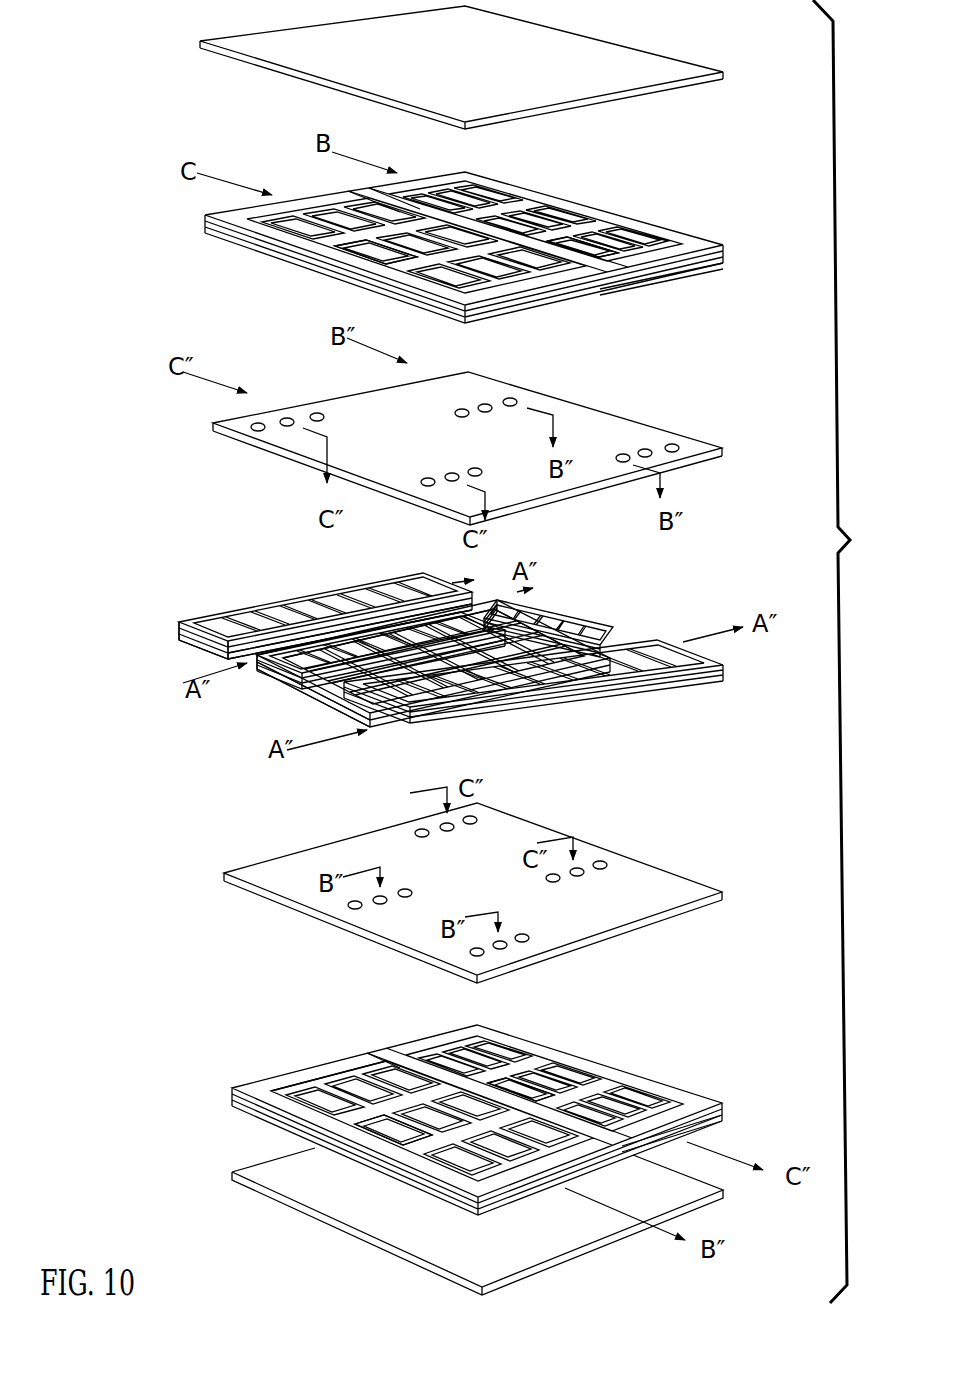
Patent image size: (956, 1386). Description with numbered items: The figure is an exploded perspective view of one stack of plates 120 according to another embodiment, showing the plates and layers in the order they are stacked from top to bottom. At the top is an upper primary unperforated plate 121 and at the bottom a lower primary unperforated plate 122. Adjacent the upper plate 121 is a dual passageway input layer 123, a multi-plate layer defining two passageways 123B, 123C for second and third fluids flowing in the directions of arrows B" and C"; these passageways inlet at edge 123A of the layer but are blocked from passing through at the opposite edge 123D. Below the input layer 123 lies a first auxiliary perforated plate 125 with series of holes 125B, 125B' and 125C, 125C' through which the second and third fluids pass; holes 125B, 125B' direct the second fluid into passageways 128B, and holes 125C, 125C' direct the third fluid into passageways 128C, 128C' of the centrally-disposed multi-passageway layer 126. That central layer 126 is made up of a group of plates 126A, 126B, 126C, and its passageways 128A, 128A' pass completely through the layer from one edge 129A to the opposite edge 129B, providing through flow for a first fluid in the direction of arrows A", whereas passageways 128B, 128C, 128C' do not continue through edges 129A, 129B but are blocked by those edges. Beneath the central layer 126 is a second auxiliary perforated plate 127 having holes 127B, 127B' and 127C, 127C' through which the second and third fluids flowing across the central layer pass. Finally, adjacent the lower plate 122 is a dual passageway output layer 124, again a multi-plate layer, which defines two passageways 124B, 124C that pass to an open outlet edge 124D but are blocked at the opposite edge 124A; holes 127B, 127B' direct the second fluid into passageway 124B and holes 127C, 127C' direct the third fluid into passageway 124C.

The exploded stack of plates 120 is at (851, 651).
The upper primary unperforated plate 121 is at (600, 48).
The lower primary unperforated plate 122 is at (297, 1210).
The dual passageway input layer 123 is at (673, 230).
The inlet edge of input layer 123A is at (343, 200).
The input layer passageway for second fluid 123B is at (567, 227).
The input layer passageway for third fluid 123C is at (347, 243).
The blocked edge of input layer 123D is at (650, 267).
The dual passageway output layer 124 is at (685, 1083).
The blocked edge of output layer 124A is at (323, 1060).
The output layer passageway for second fluid 124B is at (360, 1117).
The output layer passageway for third fluid 124C is at (513, 1080).
The open outlet edge of output layer 124D is at (693, 1135).
The first auxiliary perforated plate 125 is at (637, 425).
The holes for second fluid in first auxiliary plate 125B is at (535, 377).
The holes for second fluid in first auxiliary plate 125B' is at (697, 434).
The holes for third fluid in first auxiliary plate 125C is at (308, 432).
The holes for third fluid in first auxiliary plate 125C' is at (423, 504).
The centrally-disposed multi-passageway layer 126 is at (553, 600).
The plate of central layer 126A is at (210, 612).
The plate of central layer 126B is at (173, 630).
The plate of central layer 126C is at (197, 655).
The second auxiliary perforated plate 127 is at (632, 858).
The holes for second fluid in second auxiliary plate 127B is at (362, 928).
The holes for second fluid in second auxiliary plate 127B' is at (530, 969).
The holes for third fluid in second auxiliary plate 127C is at (392, 821).
The holes for third fluid in second auxiliary plate 127C' is at (628, 907).
The through flow passageway for first fluid 128A is at (433, 604).
The through flow passageway for first fluid 128A' is at (327, 725).
The flow passageway for second fluid 128B is at (533, 703).
The flow passageway for third fluid 128C is at (325, 594).
The flow passageway for third fluid 128C' is at (555, 622).
The first edge of central layer 129A is at (323, 663).
The second edge of central layer 129B is at (525, 602).